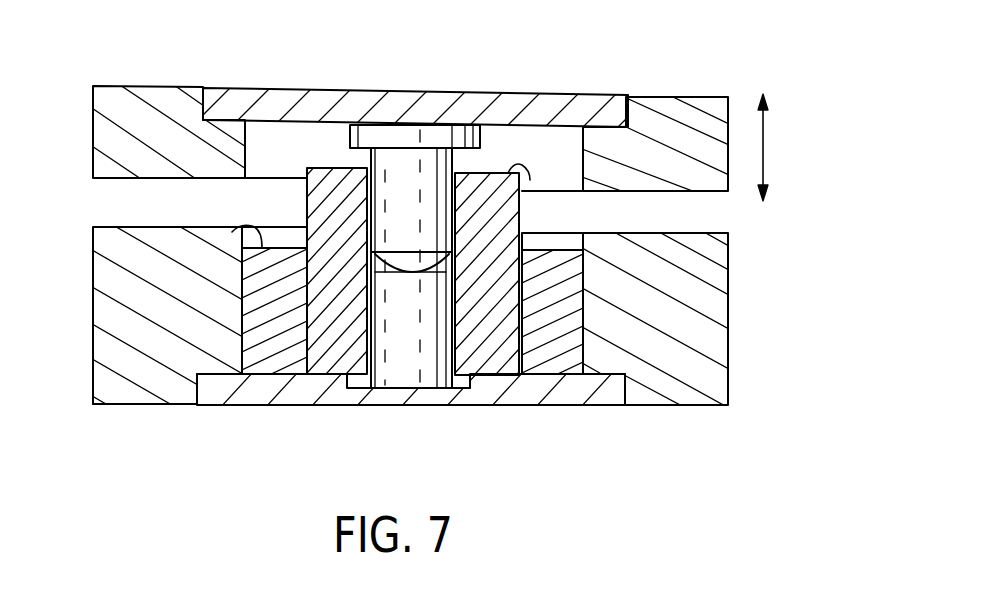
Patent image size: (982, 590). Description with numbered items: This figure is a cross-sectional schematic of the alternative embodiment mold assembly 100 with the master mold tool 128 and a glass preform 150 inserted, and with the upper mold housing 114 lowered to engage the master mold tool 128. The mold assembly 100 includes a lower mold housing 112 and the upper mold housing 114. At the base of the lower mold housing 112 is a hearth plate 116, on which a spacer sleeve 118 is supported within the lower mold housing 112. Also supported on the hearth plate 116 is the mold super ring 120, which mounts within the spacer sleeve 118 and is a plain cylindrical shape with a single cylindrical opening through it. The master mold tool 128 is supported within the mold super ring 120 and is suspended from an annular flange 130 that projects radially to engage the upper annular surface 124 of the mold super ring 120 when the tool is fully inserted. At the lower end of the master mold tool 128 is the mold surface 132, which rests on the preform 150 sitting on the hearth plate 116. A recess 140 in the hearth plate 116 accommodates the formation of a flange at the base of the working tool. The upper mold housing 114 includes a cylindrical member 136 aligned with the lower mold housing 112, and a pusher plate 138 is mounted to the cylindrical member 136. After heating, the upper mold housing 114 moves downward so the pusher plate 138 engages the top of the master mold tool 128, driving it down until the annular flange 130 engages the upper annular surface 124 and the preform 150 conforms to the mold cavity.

The mold assembly 100 is at (750, 372).
The lower mold housing 112 is at (713, 292).
The upper mold housing 114 is at (652, 98).
The hearth plate 116 is at (225, 392).
The spacer sleeve 118 is at (222, 234).
The mold super ring 120 is at (312, 203).
The upper annular surface 124 is at (530, 180).
The master mold tool 128 is at (416, 165).
The annular flange 130 is at (348, 140).
The mold surface 132 is at (408, 268).
The cylindrical member 136 is at (150, 95).
The pusher plate 138 is at (492, 105).
The recess 140 is at (463, 392).
The preform 150 is at (428, 392).